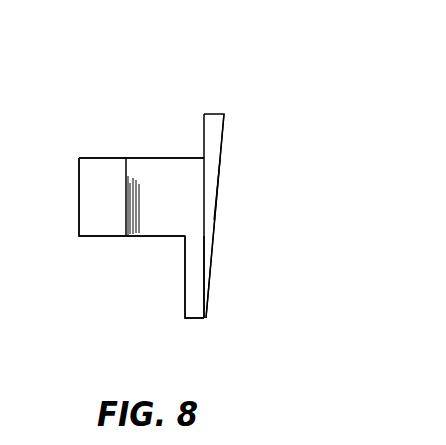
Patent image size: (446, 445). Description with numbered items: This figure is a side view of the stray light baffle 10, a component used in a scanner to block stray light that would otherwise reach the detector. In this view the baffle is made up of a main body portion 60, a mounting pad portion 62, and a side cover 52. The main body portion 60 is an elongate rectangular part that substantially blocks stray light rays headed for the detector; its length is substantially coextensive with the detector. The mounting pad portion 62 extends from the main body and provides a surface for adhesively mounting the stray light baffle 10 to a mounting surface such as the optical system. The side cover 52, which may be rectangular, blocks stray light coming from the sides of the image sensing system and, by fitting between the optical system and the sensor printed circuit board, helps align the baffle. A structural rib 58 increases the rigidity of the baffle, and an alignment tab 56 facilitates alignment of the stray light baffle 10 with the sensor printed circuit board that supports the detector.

The stray light baffle 10 is at (237, 87).
The side covers 52 is at (112, 237).
The alignment tabs 56 is at (204, 122).
The structural ribs 58 is at (213, 230).
The main body portion 60 is at (206, 180).
The mounting pad portion 62 is at (185, 292).